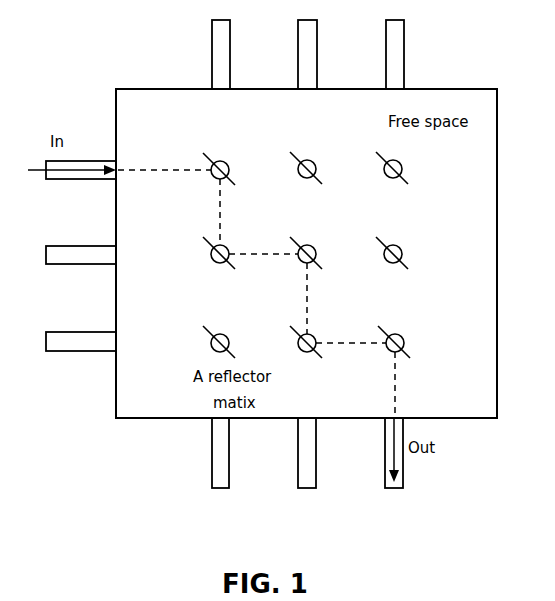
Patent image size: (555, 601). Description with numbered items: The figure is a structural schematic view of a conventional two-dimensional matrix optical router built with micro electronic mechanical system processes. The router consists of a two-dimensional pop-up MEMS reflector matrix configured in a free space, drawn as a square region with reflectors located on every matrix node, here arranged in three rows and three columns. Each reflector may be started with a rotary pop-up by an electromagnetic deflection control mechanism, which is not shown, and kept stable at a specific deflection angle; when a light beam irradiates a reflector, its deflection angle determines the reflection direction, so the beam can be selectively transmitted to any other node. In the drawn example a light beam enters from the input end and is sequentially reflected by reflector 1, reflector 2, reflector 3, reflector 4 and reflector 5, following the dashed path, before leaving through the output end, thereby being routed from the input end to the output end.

The reflector 1 is at (224, 169).
The reflector 2 is at (224, 251).
The reflector 3 is at (312, 253).
The reflector 4 is at (312, 337).
The reflector 5 is at (399, 337).